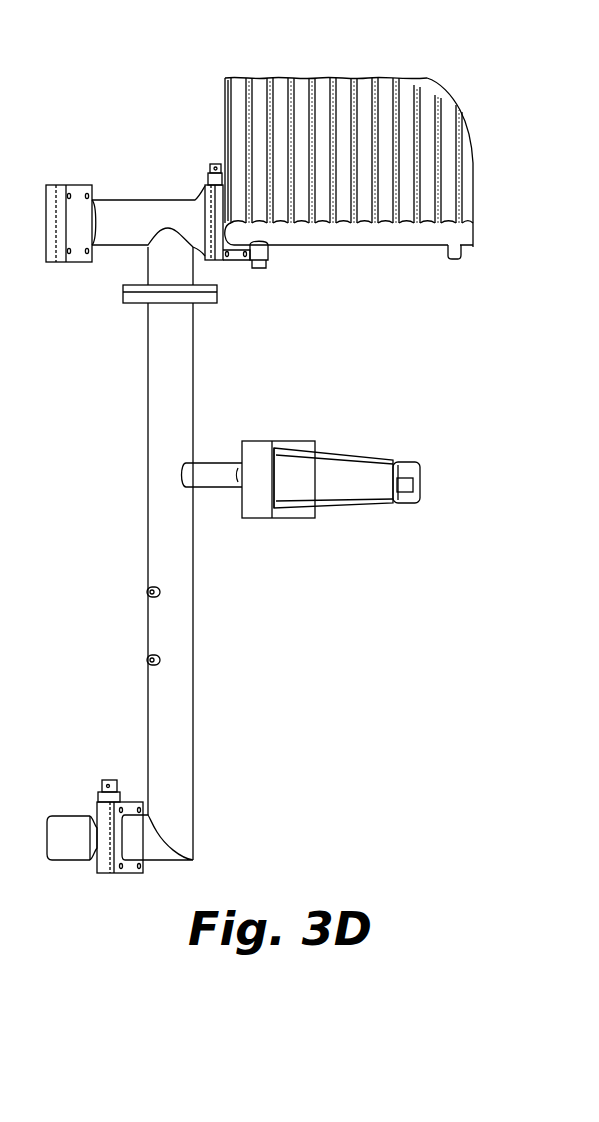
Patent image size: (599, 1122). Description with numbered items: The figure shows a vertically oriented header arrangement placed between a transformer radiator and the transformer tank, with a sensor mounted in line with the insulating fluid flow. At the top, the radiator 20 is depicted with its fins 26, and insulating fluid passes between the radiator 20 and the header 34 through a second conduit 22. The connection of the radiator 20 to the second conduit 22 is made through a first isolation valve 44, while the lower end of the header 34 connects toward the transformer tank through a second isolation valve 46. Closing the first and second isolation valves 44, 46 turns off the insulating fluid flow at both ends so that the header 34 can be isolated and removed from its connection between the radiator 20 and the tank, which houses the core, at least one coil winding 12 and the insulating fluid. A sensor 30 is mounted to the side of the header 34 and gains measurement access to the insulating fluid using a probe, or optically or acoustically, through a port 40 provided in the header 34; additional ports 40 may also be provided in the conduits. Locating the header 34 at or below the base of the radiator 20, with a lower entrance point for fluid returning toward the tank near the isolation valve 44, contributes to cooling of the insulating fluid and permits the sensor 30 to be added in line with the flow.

The coil winding 12 is at (46, 218).
The second conduit 22 is at (138, 212).
The first isolation valve 44 is at (228, 212).
The fins 26 is at (345, 148).
The radiator 20 is at (388, 196).
The header 34 is at (160, 540).
The port 40 is at (215, 482).
The sensor 30 is at (358, 475).
The second isolation valve 46 is at (63, 822).